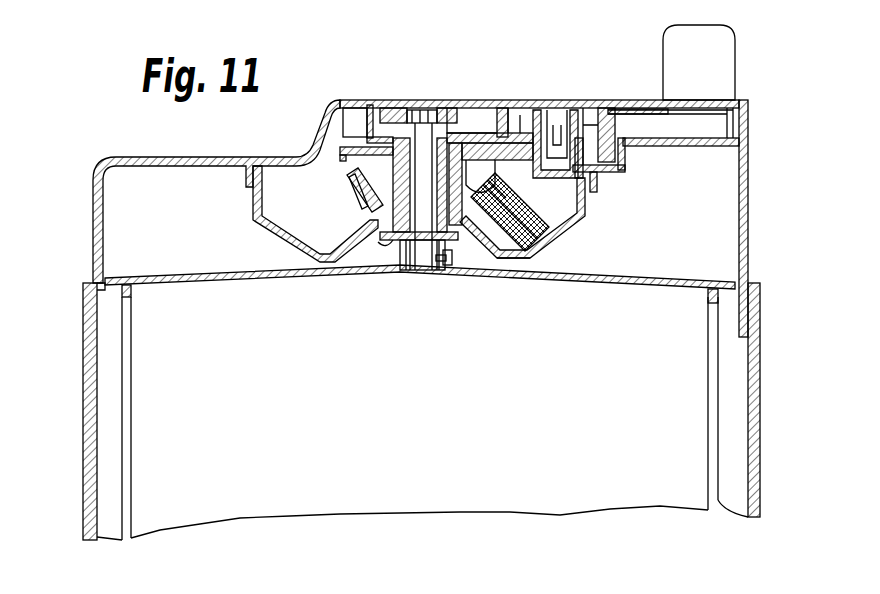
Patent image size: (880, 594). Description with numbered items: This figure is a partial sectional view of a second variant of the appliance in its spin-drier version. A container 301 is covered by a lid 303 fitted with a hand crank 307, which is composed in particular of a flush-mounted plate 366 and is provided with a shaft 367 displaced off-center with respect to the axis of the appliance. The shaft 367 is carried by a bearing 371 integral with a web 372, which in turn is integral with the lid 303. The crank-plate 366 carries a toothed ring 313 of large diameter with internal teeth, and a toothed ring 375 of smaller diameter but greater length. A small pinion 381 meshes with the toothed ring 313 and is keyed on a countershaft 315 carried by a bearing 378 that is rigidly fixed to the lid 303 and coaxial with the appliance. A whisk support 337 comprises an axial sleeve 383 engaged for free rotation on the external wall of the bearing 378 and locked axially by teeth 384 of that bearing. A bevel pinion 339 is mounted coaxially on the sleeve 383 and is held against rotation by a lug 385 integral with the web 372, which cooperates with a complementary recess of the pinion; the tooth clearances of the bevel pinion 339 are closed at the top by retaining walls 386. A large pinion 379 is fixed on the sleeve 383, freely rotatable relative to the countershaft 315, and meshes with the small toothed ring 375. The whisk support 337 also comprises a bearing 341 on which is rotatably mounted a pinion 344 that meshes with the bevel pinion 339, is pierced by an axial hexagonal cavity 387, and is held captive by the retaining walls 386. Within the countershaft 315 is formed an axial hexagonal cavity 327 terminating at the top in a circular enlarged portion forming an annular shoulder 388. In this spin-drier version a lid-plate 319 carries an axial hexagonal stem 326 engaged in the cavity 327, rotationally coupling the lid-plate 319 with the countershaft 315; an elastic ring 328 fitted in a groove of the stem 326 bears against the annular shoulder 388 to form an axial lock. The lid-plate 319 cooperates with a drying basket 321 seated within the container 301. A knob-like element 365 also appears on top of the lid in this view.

The container 301 is at (762, 367).
The lid 303 is at (752, 182).
The hand crank 307 is at (627, 97).
The toothed ring 313 is at (724, 122).
The countershaft 315 is at (406, 272).
The lid-plate 319 is at (610, 288).
The drying basket 321 is at (708, 413).
The axial hexagonal stem 326 is at (420, 257).
The axial hexagonal cavity 327 is at (447, 258).
The elastic ring 328 is at (418, 110).
The whisk support 337 is at (252, 227).
The bevel pinion 339 is at (353, 195).
The bearing 341 is at (497, 258).
The pinion 344 is at (543, 240).
The knob 365 is at (727, 36).
The flush-mounted plate 366 is at (486, 100).
The shaft 367 is at (556, 115).
The bearing 371 is at (590, 110).
The web 372 is at (697, 147).
The toothed ring 375 is at (613, 158).
The bearing 378 is at (382, 232).
The pinion 379 is at (343, 153).
The pinion 381 is at (455, 122).
The axial sleeve 383 is at (350, 173).
The teeth 384 is at (390, 242).
The lug 385 is at (517, 173).
The retaining walls 386 is at (347, 178).
The axial hexagonal cavity 387 is at (530, 210).
The annular shoulder 388 is at (408, 110).